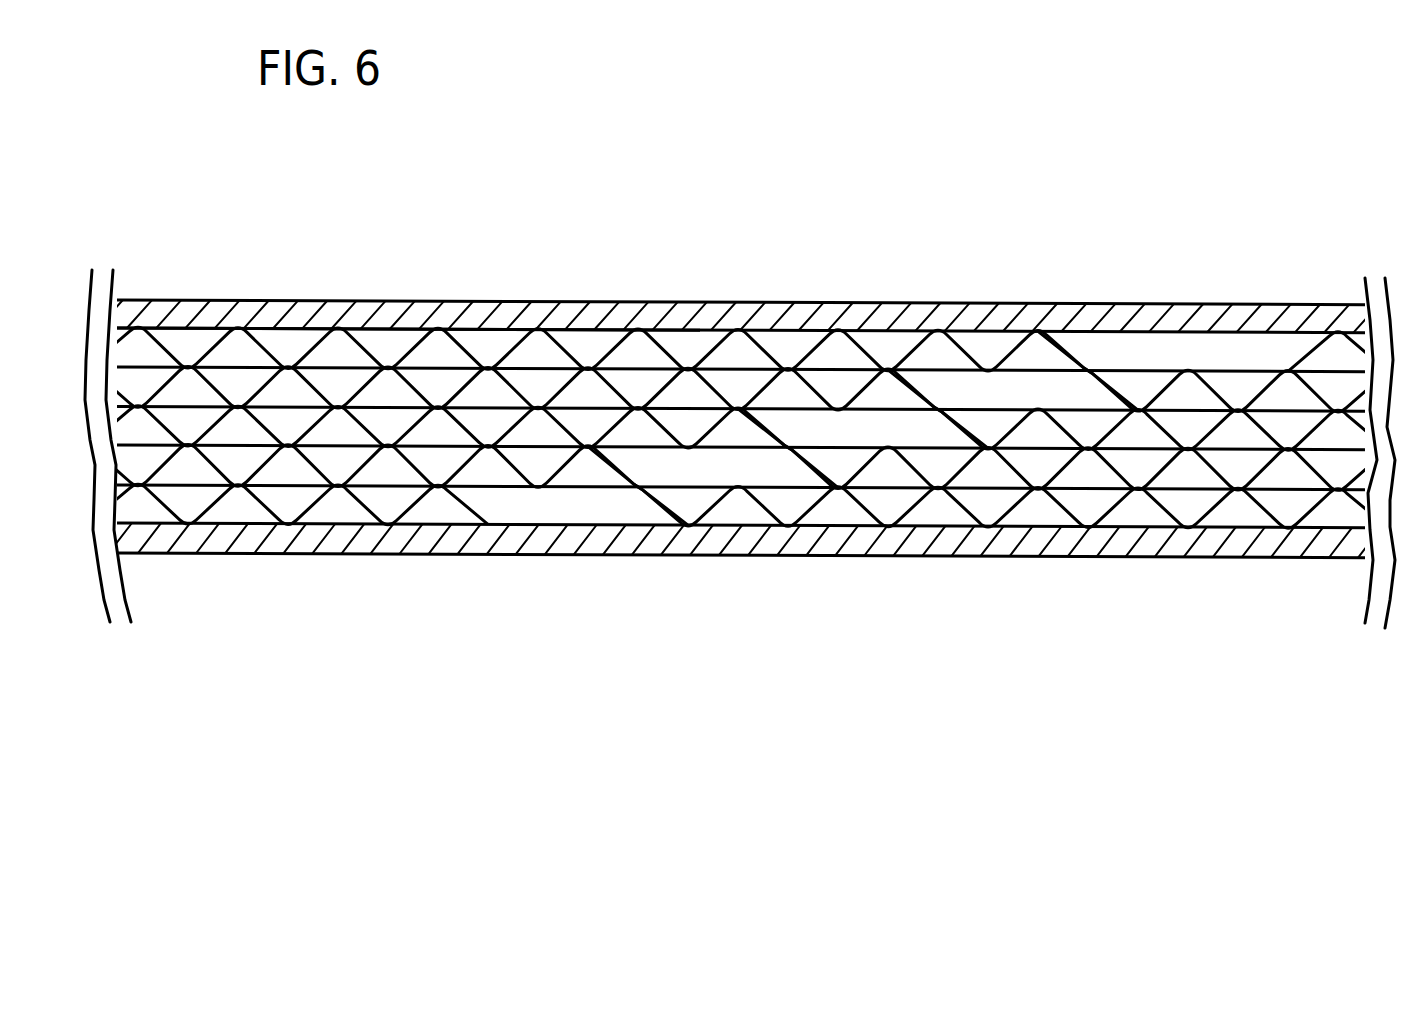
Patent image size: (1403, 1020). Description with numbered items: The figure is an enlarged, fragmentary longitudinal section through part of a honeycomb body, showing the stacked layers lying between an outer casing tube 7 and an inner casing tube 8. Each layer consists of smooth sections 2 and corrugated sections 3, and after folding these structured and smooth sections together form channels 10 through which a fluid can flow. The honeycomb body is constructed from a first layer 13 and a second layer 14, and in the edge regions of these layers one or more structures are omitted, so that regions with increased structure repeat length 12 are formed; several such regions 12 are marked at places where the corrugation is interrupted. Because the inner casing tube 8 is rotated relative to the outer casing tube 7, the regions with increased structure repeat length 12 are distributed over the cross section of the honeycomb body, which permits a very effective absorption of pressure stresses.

The smooth sections 2 is at (283, 487).
The corrugated sections 3 is at (367, 508).
The outer casing tube 7 is at (497, 313).
The inner casing tube 8 is at (534, 540).
The channels 10 is at (692, 343).
The regions with increased structure repeat length 12 is at (972, 368).
The first layer 13 is at (382, 348).
The second layer 14 is at (1333, 357).